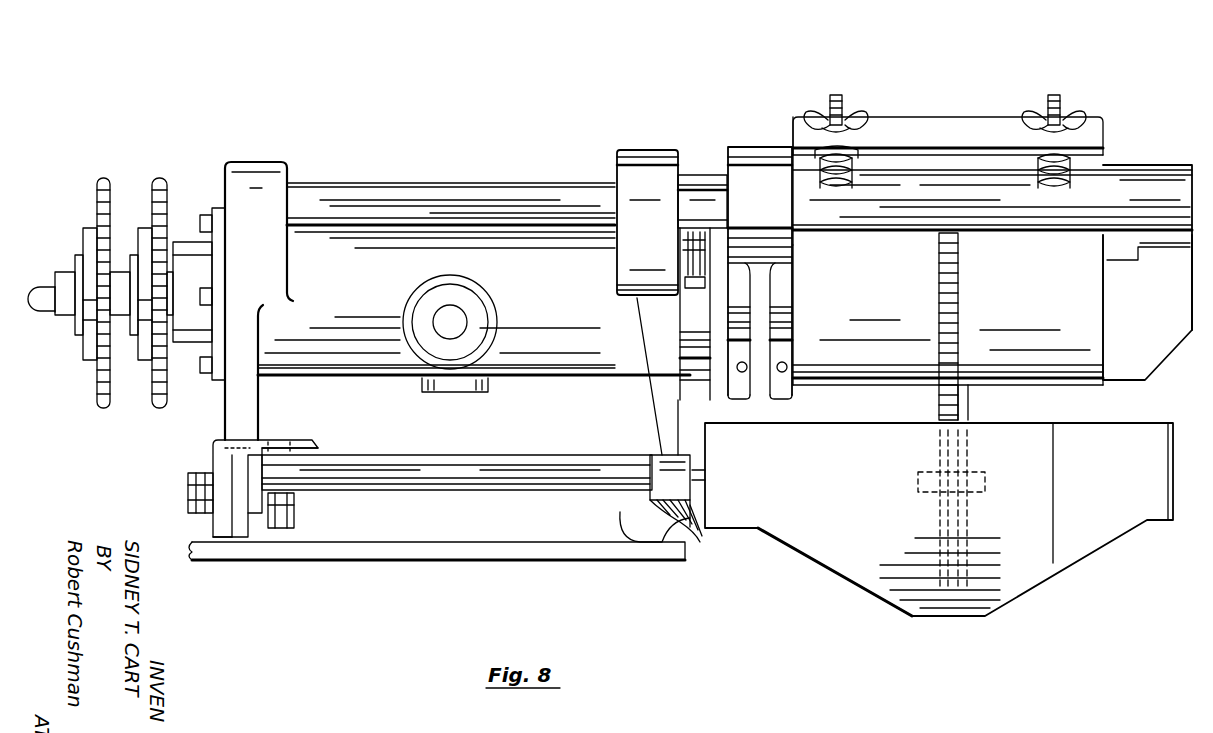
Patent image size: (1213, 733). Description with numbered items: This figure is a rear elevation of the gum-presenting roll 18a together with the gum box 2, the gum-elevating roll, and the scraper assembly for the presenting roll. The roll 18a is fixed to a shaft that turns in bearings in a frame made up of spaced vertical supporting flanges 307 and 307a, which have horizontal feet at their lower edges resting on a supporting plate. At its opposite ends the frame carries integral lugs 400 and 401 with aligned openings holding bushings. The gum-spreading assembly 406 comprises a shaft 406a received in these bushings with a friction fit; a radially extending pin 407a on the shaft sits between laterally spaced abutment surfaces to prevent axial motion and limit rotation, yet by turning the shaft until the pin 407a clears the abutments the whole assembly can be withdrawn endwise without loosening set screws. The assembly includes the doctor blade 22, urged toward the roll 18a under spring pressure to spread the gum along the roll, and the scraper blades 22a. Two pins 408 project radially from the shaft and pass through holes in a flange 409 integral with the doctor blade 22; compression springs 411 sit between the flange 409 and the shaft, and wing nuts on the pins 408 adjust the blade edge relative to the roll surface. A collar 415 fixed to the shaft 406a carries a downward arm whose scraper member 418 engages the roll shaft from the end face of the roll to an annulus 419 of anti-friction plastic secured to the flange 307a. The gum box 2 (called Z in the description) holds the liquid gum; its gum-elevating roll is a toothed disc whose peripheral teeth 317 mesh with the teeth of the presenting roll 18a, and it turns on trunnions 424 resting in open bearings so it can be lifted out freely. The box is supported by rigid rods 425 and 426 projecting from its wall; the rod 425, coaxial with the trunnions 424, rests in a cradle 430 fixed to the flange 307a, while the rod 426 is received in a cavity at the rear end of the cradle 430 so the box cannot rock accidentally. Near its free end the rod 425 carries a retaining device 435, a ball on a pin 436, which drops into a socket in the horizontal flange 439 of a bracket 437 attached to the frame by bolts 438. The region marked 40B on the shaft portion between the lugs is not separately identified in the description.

The gum box 2 is at (862, 613).
The gum-presenting roll 18a is at (1028, 286).
The doctor blade 22 is at (1095, 162).
The scraper blades 22a is at (1158, 310).
The vertical supporting flange 307 is at (232, 422).
The vertical supporting flange 307a is at (660, 410).
The peripheral teeth 317 is at (970, 405).
The lug 400 is at (270, 177).
The lug 401 is at (626, 162).
The gum-spreading assembly 406 is at (1030, 88).
The shaft 406a is at (698, 185).
The radially extending pin 407a is at (690, 264).
The pins 408 is at (845, 110).
The flange 409 is at (960, 140).
The top bar 40B is at (455, 186).
The compression springs 411 is at (870, 160).
The collar 415 is at (758, 152).
The scraper member 418 is at (790, 386).
The annulus 419 is at (686, 165).
The trunnion elements 424 is at (985, 475).
The rod 425 is at (500, 480).
The rod 426 is at (698, 470).
The cradle 430 is at (705, 495).
The retaining device 435 is at (272, 445).
The pin 436 is at (292, 526).
The bracket 437 is at (218, 525).
The bolts 438 is at (200, 478).
The horizontal flange 439 is at (315, 448).